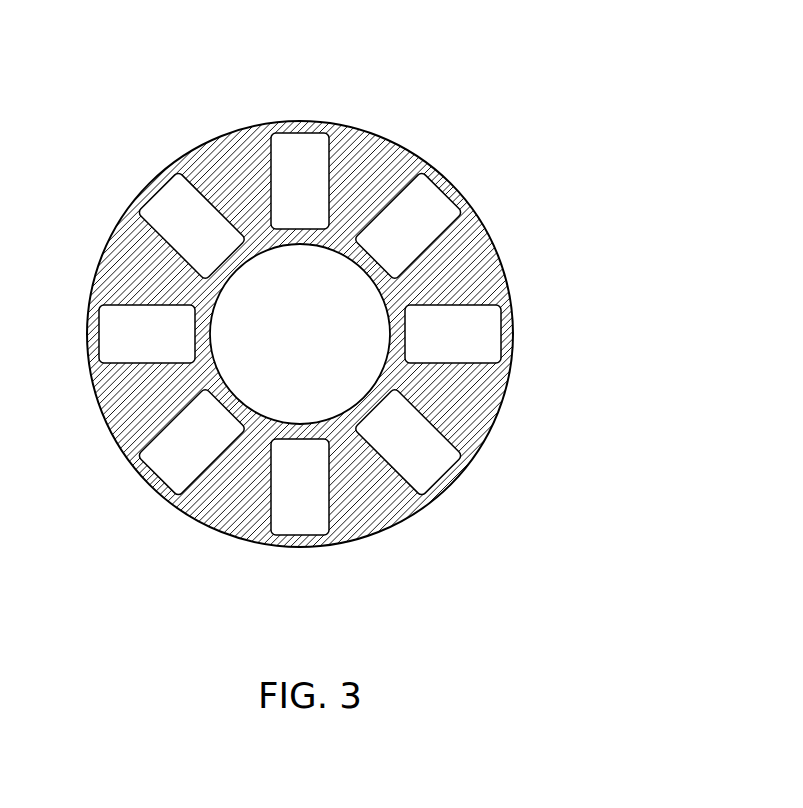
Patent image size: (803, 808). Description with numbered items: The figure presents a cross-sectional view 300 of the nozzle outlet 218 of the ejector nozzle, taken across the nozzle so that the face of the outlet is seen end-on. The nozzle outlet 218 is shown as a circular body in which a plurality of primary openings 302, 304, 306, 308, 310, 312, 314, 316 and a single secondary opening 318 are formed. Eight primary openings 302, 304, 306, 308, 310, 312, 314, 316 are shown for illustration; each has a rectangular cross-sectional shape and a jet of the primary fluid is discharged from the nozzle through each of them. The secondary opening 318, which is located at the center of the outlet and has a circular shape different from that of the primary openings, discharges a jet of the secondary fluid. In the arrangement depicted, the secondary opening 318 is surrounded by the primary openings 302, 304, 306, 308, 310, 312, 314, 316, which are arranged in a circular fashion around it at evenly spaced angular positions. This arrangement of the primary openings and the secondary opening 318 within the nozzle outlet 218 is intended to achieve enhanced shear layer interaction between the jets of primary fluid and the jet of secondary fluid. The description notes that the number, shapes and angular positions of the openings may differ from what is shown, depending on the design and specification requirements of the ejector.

The cross-sectional view 300 is at (538, 65).
The nozzle outlet 218 is at (377, 133).
The primary opening 302 is at (165, 198).
The primary opening 304 is at (301, 140).
The primary opening 306 is at (435, 195).
The primary opening 308 is at (495, 337).
The primary opening 310 is at (433, 472).
The primary opening 312 is at (298, 525).
The primary opening 314 is at (162, 470).
The primary opening 316 is at (105, 333).
The secondary opening 318 is at (322, 346).